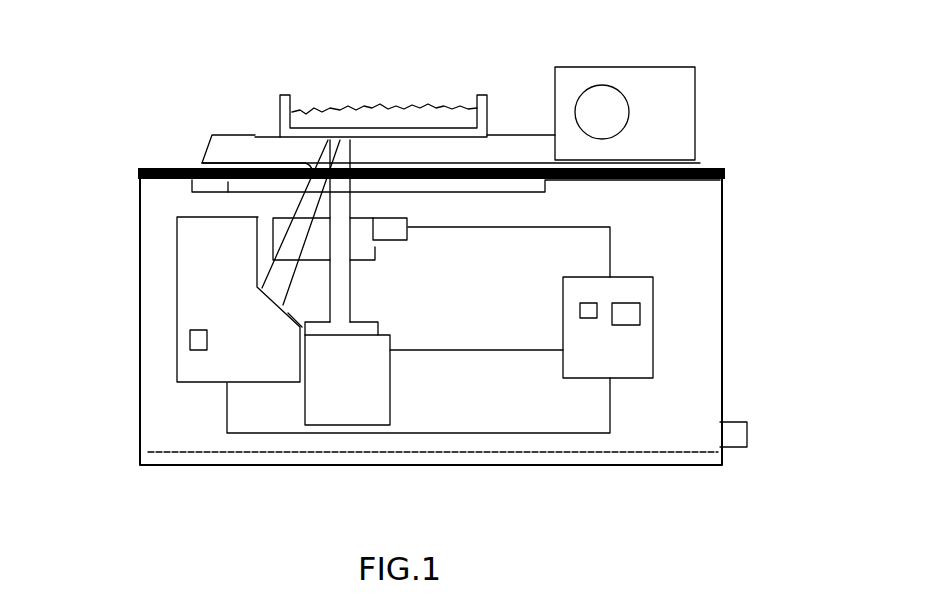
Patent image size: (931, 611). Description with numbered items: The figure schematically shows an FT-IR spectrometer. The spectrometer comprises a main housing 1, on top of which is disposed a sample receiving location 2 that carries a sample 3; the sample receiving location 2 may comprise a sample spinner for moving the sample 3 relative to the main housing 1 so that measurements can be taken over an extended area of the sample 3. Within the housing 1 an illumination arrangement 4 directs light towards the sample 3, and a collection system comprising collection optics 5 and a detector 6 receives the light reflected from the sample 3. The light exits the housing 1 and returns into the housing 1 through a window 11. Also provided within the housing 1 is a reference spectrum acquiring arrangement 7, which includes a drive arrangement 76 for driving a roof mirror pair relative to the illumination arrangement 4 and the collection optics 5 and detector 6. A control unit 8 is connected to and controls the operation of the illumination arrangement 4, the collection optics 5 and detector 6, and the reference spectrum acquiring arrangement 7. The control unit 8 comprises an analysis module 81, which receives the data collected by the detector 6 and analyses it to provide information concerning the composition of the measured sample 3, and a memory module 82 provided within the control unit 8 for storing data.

The main housing 1 is at (138, 253).
The sample receiving location 2 is at (258, 142).
The sample 3 is at (322, 113).
The illumination arrangement 4 is at (340, 405).
The collection optics 5 is at (193, 365).
The detector 6 is at (190, 338).
The reference spectrum acquiring arrangement 7 is at (372, 250).
The control unit 8 is at (636, 357).
The window 11 is at (312, 172).
The drive arrangement 76 is at (395, 228).
The analysis module 81 is at (636, 316).
The memory module 82 is at (593, 307).